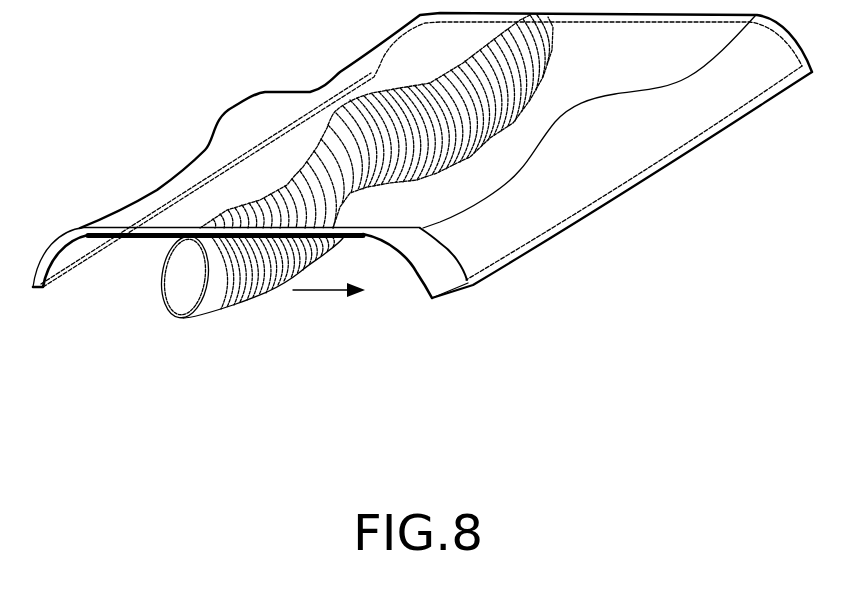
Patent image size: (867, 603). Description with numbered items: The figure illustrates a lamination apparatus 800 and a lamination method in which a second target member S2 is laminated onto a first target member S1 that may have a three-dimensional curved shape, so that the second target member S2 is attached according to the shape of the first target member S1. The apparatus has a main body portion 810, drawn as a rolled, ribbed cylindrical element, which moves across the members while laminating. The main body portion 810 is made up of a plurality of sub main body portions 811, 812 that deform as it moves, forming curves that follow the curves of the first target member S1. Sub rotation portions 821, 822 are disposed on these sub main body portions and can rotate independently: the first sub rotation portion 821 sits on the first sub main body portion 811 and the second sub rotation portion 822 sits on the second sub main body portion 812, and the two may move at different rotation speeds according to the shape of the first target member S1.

The lamination apparatus 800 is at (151, 296).
The main body portion 810 is at (186, 303).
The first sub rotation portion 821 is at (270, 320).
The first sub main body portion 811 is at (232, 298).
The second sub rotation portion 822 is at (376, 208).
The second sub main body portion 812 is at (233, 302).
The first target member S1 is at (522, 242).
The second target member S2 is at (430, 290).